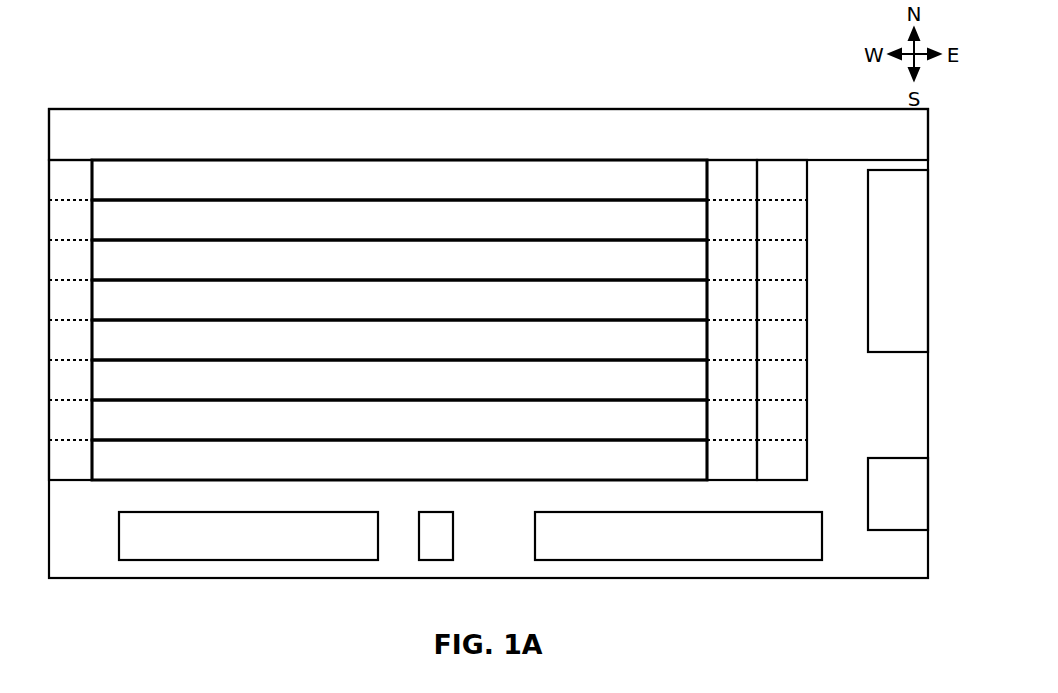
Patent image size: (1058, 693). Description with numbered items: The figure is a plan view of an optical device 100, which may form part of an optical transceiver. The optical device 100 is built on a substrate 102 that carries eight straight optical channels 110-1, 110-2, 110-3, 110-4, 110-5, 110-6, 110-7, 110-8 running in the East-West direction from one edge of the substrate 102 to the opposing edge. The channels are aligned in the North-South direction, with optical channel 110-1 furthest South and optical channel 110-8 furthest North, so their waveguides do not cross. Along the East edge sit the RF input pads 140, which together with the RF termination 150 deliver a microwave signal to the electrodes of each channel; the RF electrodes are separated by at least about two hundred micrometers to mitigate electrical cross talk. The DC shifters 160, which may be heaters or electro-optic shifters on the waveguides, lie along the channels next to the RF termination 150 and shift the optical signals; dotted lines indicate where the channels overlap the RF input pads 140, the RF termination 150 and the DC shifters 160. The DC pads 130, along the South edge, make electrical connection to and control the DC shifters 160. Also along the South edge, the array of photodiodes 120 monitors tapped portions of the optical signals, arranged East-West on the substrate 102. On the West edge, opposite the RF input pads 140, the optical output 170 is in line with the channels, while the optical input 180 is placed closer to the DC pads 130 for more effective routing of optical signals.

The optical device 100 is at (468, 30).
The substrate 102 is at (488, 134).
The optical channel 110-1 is at (399, 460).
The optical channel 110-2 is at (399, 420).
The optical channel 110-3 is at (399, 380).
The optical channel 110-4 is at (399, 340).
The optical channel 110-5 is at (399, 300).
The optical channel 110-6 is at (399, 260).
The optical channel 110-7 is at (399, 220).
The optical channel 110-8 is at (399, 180).
The photodiodes 120 is at (248, 536).
The DC pads 130 is at (678, 536).
The RF input pads 140 is at (73, 160).
The RF termination 150 is at (728, 160).
The DC shifters 160 is at (775, 158).
The optical output 170 is at (898, 261).
The optical input 180 is at (898, 494).